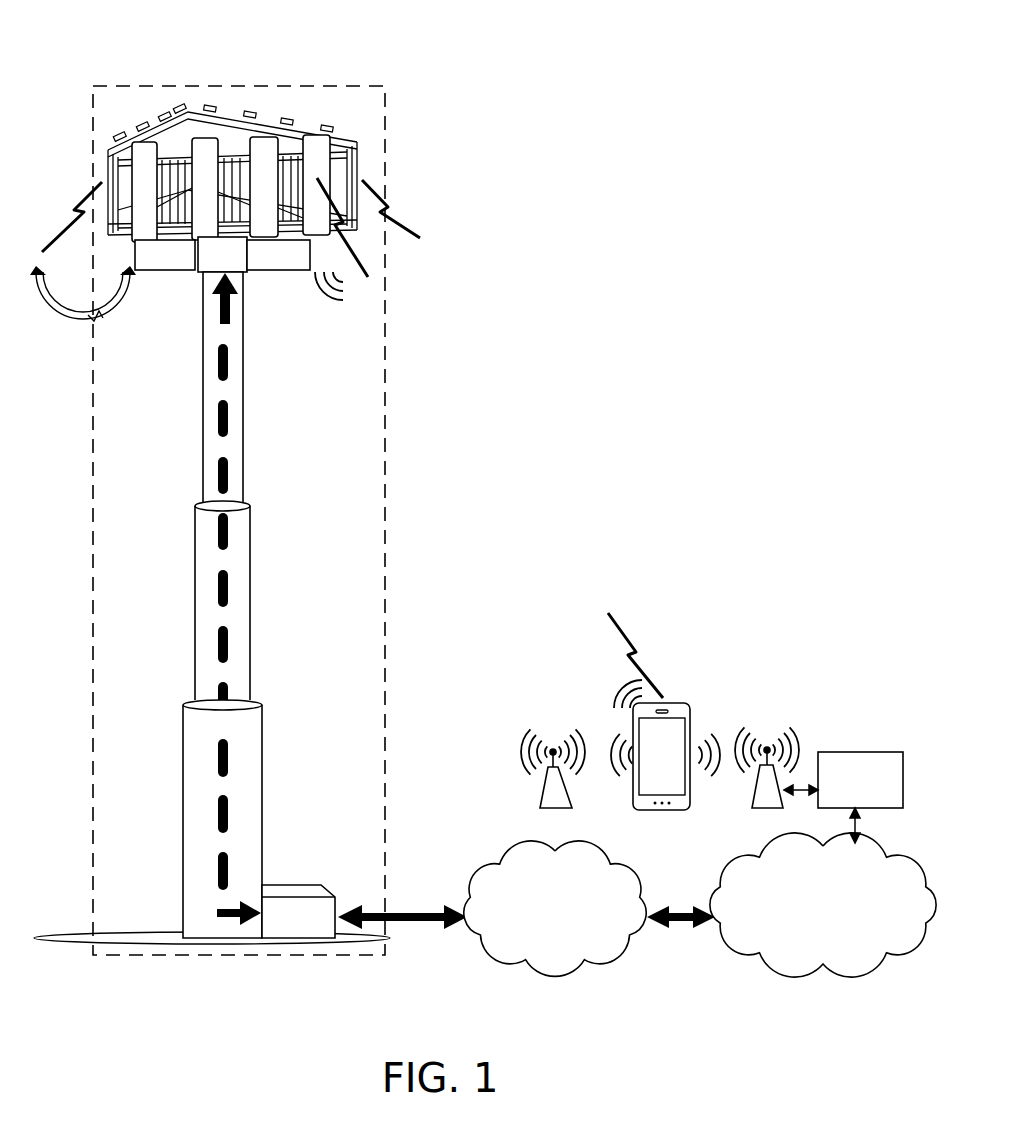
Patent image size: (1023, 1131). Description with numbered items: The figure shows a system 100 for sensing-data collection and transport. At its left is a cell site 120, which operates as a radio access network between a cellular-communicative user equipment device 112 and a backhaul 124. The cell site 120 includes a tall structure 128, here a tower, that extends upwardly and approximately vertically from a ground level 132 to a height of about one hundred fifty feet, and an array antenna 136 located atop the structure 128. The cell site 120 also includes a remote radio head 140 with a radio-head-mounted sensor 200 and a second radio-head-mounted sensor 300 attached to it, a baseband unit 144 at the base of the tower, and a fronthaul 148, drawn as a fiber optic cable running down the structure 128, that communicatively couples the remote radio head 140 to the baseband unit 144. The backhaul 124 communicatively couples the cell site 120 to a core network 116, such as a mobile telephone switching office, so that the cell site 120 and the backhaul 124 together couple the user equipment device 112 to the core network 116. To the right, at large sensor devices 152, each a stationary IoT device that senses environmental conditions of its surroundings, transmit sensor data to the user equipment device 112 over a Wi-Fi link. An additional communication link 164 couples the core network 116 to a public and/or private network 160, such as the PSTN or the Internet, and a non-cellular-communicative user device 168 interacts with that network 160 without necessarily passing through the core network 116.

The system 100 is at (47, 54).
The cell site 120 is at (92, 500).
The structure 128 is at (203, 468).
The ground level 132 is at (156, 934).
The array antenna 136 is at (313, 128).
The remote radio head 140 is at (244, 274).
The baseband unit 144 is at (321, 884).
The fronthaul 148 is at (250, 591).
The radio-head-mounted sensor 300 is at (165, 274).
The radio-head-mounted sensor 200 is at (285, 273).
The backhaul 124 is at (400, 908).
The core network 116 is at (625, 858).
The additional communication link 164 is at (677, 906).
The public and/or private network 160 is at (905, 853).
The user equipment device 112 is at (690, 703).
The at large sensor device 152 is at (540, 800).
The non-cellular-communicative user device 168 is at (862, 752).